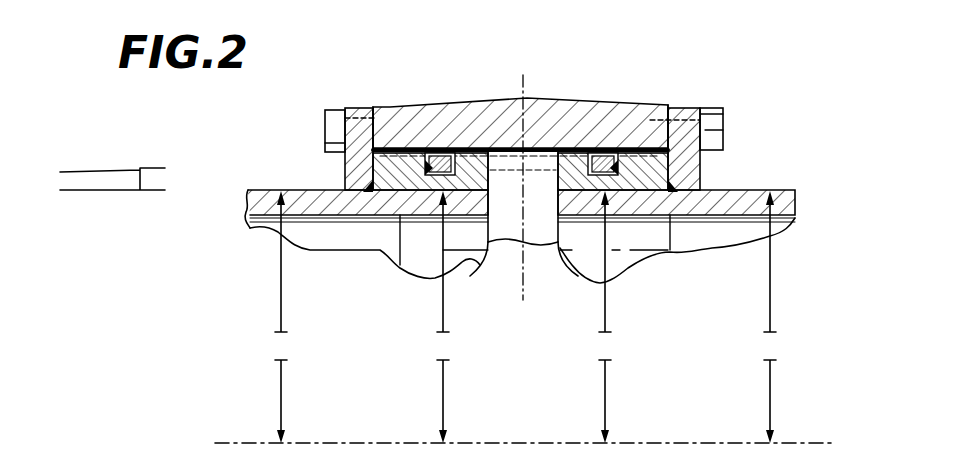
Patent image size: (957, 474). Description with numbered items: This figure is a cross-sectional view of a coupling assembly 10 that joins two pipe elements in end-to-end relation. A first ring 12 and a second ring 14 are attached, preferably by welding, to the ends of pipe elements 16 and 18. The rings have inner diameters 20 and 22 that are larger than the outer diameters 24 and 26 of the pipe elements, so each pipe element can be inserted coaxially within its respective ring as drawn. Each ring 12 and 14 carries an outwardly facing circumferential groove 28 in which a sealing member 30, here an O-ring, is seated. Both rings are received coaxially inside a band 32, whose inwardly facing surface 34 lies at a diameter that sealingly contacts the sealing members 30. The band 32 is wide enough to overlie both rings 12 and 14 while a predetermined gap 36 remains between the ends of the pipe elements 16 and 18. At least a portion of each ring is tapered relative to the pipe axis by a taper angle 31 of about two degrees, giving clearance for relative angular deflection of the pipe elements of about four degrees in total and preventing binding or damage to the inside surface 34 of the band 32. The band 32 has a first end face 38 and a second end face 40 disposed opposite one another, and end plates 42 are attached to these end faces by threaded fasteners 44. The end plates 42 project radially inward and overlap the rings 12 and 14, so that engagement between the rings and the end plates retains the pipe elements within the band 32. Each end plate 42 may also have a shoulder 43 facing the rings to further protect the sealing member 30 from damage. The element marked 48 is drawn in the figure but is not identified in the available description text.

The coupling assembly 10 is at (743, 70).
The first ring 12 is at (398, 262).
The second ring 14 is at (672, 250).
The pipe element 16 is at (258, 197).
The pipe element 18 is at (795, 200).
The inner diameter 20 is at (443, 317).
The inner diameter 22 is at (605, 307).
The outer diameter 24 is at (281, 306).
The outer diameter 26 is at (770, 305).
The circumferential groove 28 is at (490, 112).
The sealing member 30 is at (447, 152).
The taper angle 31 is at (142, 180).
The band 32 is at (553, 106).
The inwardly facing surface 34 is at (527, 152).
The gap 36 is at (503, 257).
The first end face 38 is at (340, 116).
The second end face 40 is at (673, 110).
The end plate 42 is at (700, 167).
The shoulder 43 is at (346, 158).
The threaded fastener 44 is at (720, 130).
The left joint 48 is at (397, 107).